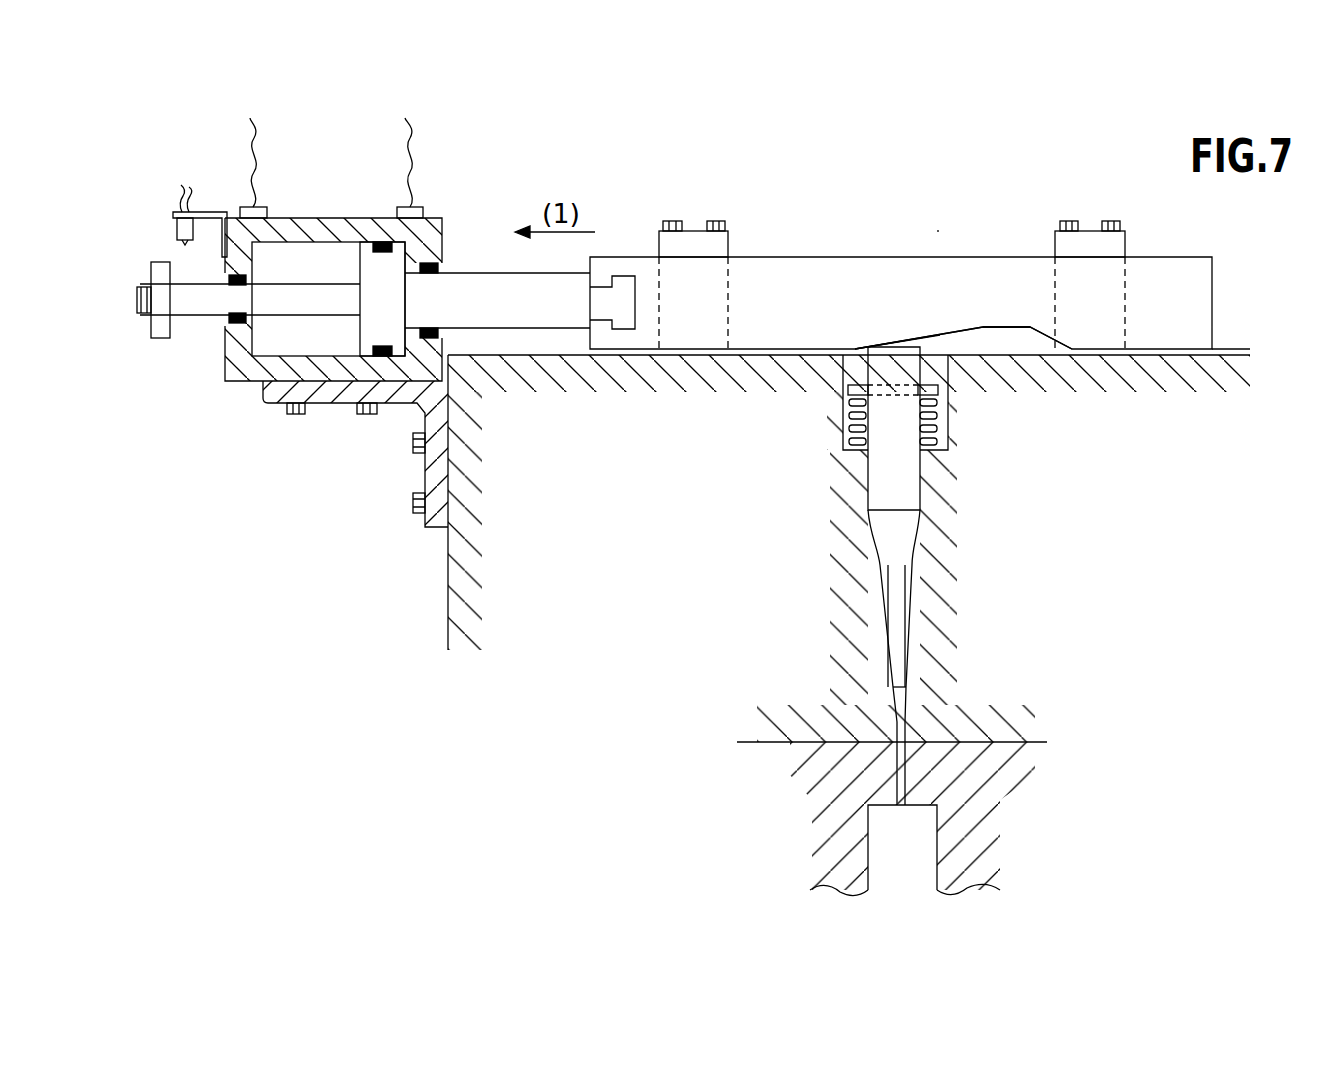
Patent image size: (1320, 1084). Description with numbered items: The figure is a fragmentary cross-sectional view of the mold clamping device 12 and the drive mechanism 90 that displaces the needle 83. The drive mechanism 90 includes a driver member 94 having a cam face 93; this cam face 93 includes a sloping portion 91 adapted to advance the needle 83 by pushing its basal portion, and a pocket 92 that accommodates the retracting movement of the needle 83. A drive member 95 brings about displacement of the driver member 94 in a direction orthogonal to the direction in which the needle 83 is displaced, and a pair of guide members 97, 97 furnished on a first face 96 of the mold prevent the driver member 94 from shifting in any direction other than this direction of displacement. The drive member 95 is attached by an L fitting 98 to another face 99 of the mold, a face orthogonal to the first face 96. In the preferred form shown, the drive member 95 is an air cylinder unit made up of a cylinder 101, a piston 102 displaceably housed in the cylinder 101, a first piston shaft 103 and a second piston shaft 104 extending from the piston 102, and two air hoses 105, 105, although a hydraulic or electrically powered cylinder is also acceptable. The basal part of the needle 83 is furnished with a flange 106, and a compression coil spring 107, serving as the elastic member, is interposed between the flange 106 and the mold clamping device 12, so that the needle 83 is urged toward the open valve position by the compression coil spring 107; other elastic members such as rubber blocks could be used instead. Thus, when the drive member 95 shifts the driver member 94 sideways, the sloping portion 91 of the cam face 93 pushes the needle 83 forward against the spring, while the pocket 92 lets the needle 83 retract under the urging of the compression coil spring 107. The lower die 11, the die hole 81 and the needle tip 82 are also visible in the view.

The lower die 11 is at (970, 825).
The mold clamping device 12 is at (1055, 457).
The die hole 81 is at (870, 865).
The needle pin 82 is at (905, 692).
The needle 83 is at (907, 487).
The drive mechanism 90 is at (938, 232).
The sloping portion 91 is at (940, 338).
The pocket 92 is at (1000, 327).
The cam face 93 is at (973, 335).
The driver member 94 is at (782, 272).
The drive member 95 is at (435, 205).
The first face 96 is at (1232, 355).
The guide members 97 is at (689, 240).
The L fitting 98 is at (338, 398).
The another face 99 is at (448, 578).
The cylinder 101 is at (250, 375).
The piston 102 is at (372, 258).
The first piston shaft 103 is at (485, 278).
The second piston shaft 104 is at (195, 310).
The air hoses 105 is at (255, 158).
The flange 106 is at (850, 388).
The compression coil spring 107 is at (850, 430).